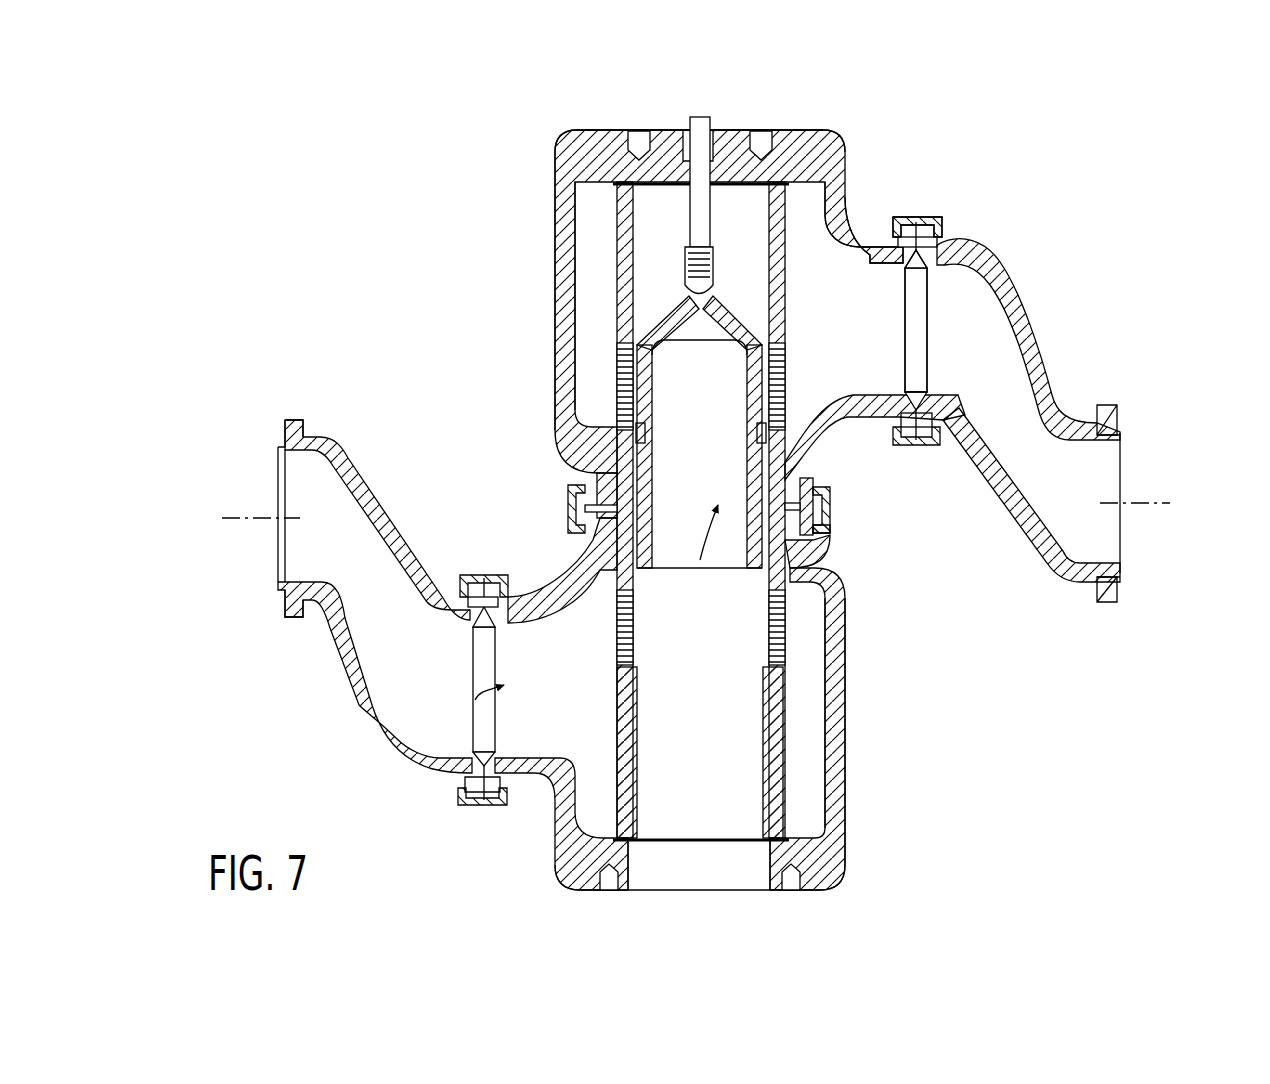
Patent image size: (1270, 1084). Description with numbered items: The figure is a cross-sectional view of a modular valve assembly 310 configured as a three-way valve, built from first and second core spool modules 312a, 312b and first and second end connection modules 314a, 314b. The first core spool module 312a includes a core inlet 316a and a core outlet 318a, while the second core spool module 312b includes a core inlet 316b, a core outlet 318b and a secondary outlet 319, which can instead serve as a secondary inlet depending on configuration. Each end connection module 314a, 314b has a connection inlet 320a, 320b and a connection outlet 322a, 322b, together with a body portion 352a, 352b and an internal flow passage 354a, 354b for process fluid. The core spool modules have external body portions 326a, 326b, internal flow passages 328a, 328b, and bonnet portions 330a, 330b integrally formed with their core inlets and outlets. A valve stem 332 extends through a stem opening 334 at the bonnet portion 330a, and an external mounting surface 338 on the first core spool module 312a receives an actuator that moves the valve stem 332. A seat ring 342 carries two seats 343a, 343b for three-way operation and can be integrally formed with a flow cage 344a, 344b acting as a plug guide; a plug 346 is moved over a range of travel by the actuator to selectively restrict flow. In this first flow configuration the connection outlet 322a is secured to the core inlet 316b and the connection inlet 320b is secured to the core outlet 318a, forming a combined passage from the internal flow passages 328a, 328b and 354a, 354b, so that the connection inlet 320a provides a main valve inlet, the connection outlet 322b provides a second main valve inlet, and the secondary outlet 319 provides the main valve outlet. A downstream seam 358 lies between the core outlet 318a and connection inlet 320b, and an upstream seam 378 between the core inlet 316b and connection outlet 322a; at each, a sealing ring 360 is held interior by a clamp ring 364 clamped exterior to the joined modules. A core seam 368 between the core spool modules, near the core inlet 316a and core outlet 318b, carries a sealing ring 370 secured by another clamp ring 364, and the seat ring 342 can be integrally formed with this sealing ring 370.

The modular valve assembly 310 is at (478, 162).
The first core spool module 312a is at (512, 290).
The second core spool module 312b is at (874, 766).
The first end connection module 314a is at (358, 700).
The second end connection module 314b is at (1028, 300).
The core inlet 316a is at (688, 574).
The core inlet 316b is at (522, 695).
The core outlet 318a is at (930, 315).
The core outlet 318b is at (690, 482).
The secondary outlet 319 is at (720, 872).
The connection inlet 320a is at (306, 540).
The connection inlet 320b is at (938, 337).
The connection outlet 322a is at (472, 680).
The connection outlet 322b is at (1104, 466).
The external body portion 326a is at (558, 350).
The external body portion 326b is at (843, 660).
The internal flow passage 328a is at (810, 282).
The internal flow passage 328b is at (586, 644).
The bonnet portion 330a is at (500, 235).
The bonnet portion 330b is at (878, 836).
The valve stem 332 is at (704, 232).
The stem opening 334 is at (682, 142).
The external mounting surface 338 is at (690, 148).
The seat ring 342 is at (617, 462).
The seat 343a is at (793, 307).
The seat 343b is at (762, 670).
The flow cage 344a is at (618, 400).
The flow cage 344b is at (770, 640).
The plug 346 is at (750, 345).
The body portion 352a is at (352, 443).
The body portion 352b is at (1064, 586).
The internal flow passage 354a is at (390, 627).
The internal flow passage 354b is at (1007, 380).
The downstream seam 358 is at (932, 185).
The sealing ring 360 is at (944, 240).
The clamp ring 364 is at (476, 578).
The core seam 368 is at (570, 503).
The sealing ring 370 is at (836, 536).
The upstream seam 378 is at (466, 808).